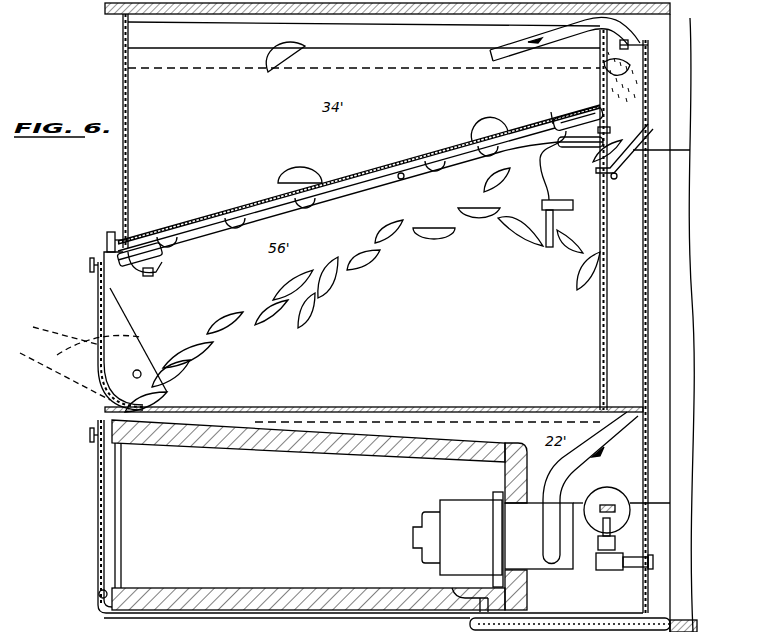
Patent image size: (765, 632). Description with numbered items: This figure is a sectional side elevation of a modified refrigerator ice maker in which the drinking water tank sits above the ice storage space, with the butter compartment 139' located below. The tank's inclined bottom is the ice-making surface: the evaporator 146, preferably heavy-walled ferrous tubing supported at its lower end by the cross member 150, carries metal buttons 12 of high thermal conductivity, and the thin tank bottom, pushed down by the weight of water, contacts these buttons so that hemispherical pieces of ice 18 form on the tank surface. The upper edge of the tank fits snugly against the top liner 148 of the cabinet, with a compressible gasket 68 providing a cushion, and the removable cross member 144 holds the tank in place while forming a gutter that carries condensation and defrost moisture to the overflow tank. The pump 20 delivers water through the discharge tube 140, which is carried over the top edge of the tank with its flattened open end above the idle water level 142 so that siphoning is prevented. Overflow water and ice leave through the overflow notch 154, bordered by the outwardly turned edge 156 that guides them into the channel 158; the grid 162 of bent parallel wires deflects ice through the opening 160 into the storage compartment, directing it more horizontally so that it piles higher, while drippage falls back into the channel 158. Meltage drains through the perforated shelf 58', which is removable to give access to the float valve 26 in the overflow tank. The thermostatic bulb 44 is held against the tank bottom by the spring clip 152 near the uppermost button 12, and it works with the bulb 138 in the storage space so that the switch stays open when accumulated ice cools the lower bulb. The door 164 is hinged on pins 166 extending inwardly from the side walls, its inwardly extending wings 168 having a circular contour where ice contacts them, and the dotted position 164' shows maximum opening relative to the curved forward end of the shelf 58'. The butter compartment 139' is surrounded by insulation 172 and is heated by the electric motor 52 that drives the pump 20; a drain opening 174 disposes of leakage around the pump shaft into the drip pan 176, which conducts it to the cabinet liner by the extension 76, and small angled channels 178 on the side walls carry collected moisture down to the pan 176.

The gasket 68 is at (118, 8).
The top liner 148 is at (226, 8).
The idle water level 142 is at (412, 72).
The channel 158 is at (619, 220).
The shelf 58' is at (374, 403).
The discharge tube 140 is at (510, 46).
The outwardly turned edge 156 is at (622, 38).
The overflow notch 154 is at (628, 43).
The evaporator 146 is at (348, 190).
The button 12 is at (203, 219).
The spring clip 152 is at (586, 110).
The bulb 44 is at (541, 110).
The bulb 138 is at (554, 218).
The opening 160 is at (610, 138).
The grid 162 is at (676, 152).
The pieces of ice 18 is at (296, 172).
The door 164 is at (108, 331).
The dotted position of the door 164' is at (80, 356).
The cross member 144 is at (106, 241).
The cross member 150 is at (162, 252).
The pins 166 is at (137, 370).
The wings 168 is at (160, 350).
The butter compartment 139' is at (319, 515).
The insulation 172 is at (305, 442).
The electric motor 52 is at (458, 539).
The pump 20 is at (572, 540).
The float valve 26 is at (610, 528).
The drain opening 174 is at (462, 598).
The drip pan 176 is at (468, 621).
The channels 178 is at (287, 625).
The extension 76 is at (667, 627).